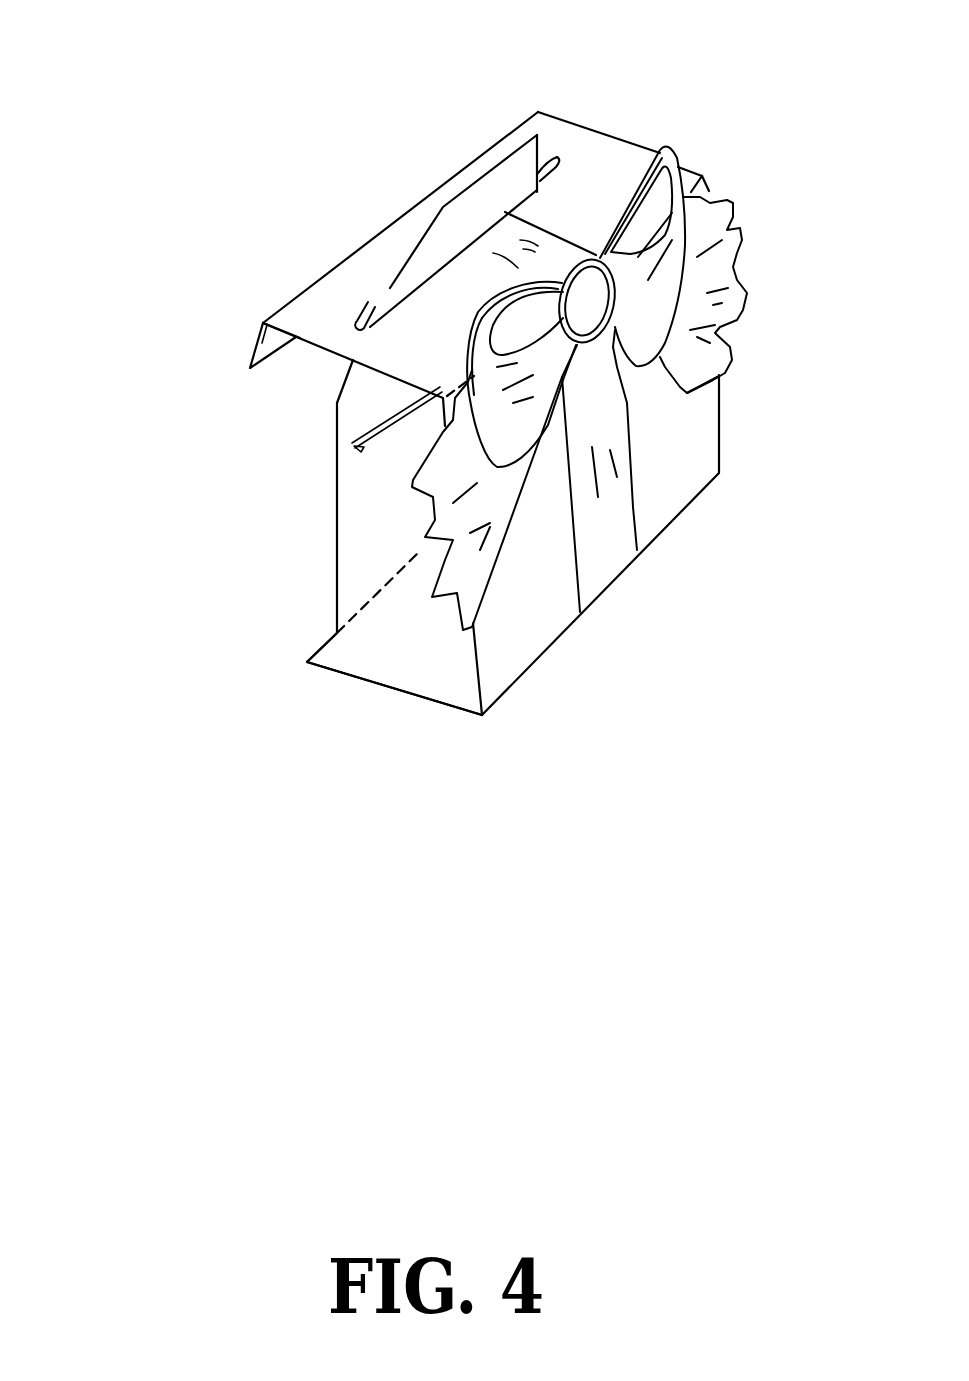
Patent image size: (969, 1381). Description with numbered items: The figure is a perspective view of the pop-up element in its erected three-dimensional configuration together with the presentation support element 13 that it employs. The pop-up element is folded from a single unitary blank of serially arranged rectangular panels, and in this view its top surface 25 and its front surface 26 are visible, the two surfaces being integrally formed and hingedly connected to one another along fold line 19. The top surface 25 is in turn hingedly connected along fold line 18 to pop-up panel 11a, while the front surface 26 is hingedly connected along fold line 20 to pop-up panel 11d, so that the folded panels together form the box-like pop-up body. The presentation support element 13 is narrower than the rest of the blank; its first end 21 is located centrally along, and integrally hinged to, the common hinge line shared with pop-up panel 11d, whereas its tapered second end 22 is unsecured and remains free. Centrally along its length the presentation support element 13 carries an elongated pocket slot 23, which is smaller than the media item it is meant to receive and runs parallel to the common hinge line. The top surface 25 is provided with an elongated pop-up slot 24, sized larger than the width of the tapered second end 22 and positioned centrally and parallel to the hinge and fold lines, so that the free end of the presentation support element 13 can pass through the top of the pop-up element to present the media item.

The pop-up panel 11a is at (258, 347).
The pop-up panel 11d is at (434, 674).
The presentation support element 13 is at (505, 175).
The fold line 18 is at (290, 318).
The fold line 19 is at (700, 178).
The fold line 20 is at (503, 702).
The first end 21 is at (408, 557).
The tapered second end 22 is at (444, 206).
The elongated pocket slot 23 is at (357, 444).
The elongated pop-up slot 24 is at (370, 310).
The top surface 25 is at (593, 152).
The front surface 26 is at (700, 427).